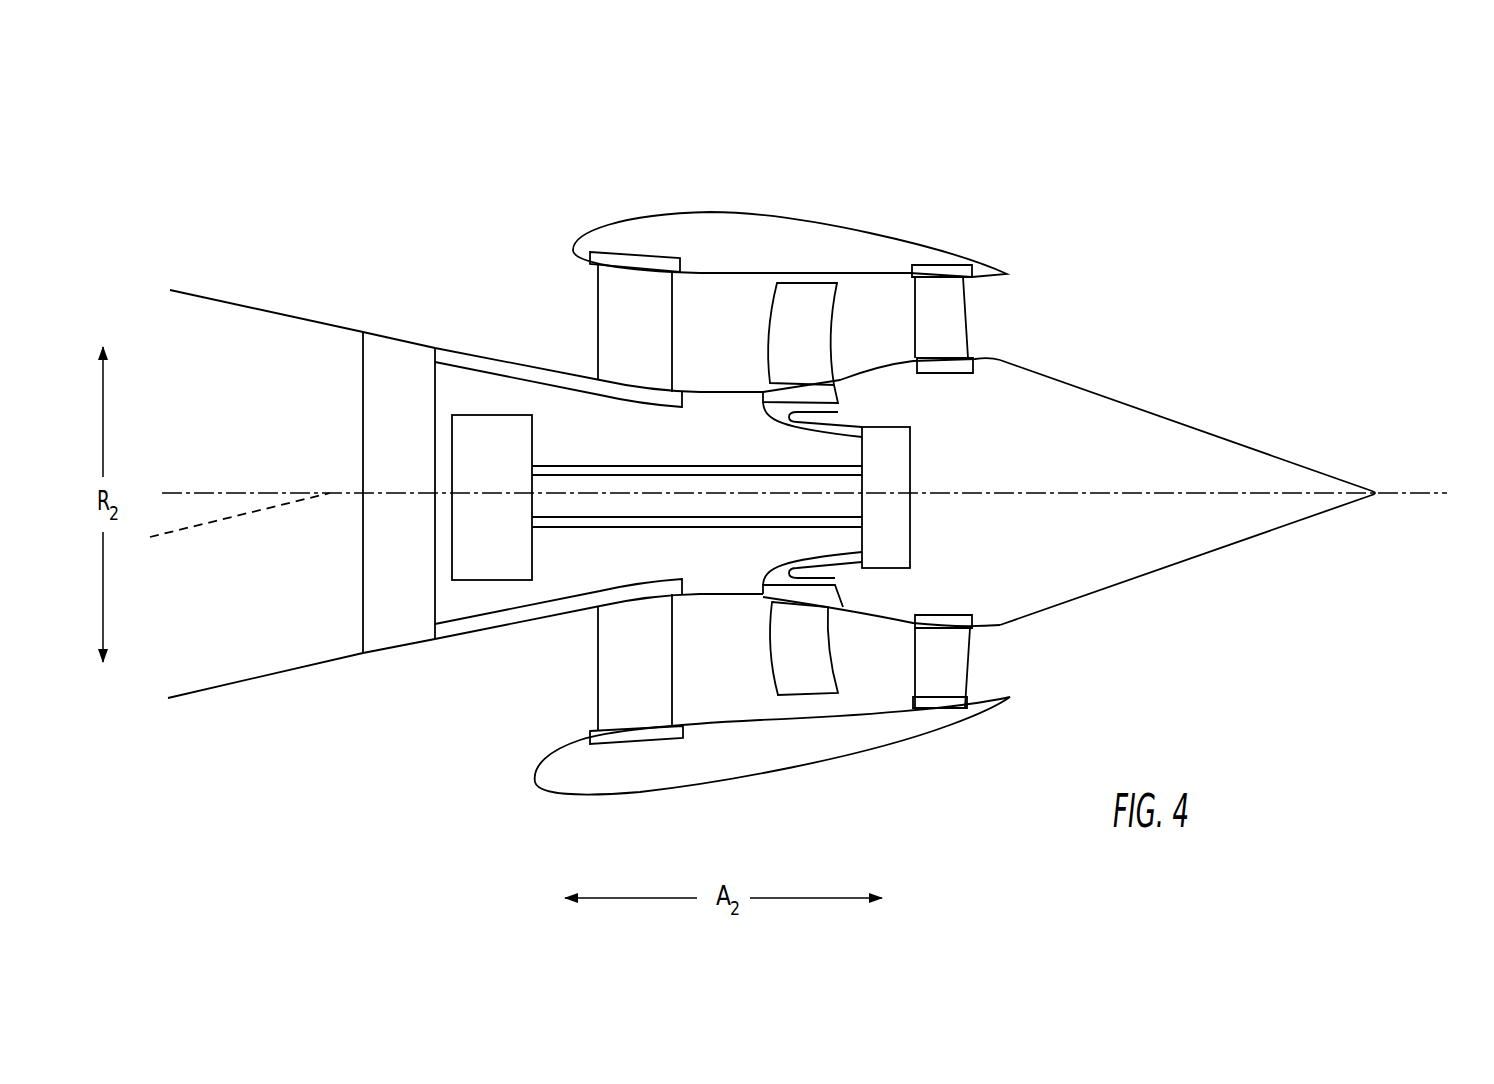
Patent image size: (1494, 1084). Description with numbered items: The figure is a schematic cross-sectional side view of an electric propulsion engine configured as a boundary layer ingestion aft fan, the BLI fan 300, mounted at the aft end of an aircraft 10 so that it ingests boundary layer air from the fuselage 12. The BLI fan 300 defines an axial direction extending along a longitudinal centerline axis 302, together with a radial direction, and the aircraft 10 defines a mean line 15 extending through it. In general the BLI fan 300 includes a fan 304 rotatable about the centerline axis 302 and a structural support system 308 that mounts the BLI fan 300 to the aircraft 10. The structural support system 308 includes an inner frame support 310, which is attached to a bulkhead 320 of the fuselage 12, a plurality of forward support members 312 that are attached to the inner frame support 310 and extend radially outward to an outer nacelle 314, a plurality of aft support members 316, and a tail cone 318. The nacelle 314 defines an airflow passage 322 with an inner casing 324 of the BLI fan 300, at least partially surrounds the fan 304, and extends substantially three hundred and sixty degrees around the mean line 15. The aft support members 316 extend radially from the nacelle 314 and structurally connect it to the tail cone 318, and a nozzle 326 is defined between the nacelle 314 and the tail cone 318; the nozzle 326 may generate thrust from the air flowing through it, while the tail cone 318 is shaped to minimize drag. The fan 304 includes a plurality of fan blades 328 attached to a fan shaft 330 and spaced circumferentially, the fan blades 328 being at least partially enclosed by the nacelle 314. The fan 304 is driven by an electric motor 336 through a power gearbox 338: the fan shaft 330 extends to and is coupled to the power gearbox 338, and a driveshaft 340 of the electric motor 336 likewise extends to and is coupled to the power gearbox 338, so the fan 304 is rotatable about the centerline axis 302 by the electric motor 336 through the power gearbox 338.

The aircraft 10 is at (283, 250).
The fuselage 12 is at (223, 687).
The mean line 15 is at (185, 530).
The BLI fan 300 is at (1062, 143).
The longitudinal centerline axis 302 is at (1407, 492).
The fan 304 is at (865, 313).
The structural support system 308 is at (557, 322).
The inner frame support 310 is at (518, 363).
The forward support members 312 is at (628, 283).
The outer nacelle 314 is at (702, 212).
The aft support members 316 is at (943, 287).
The tail cone 318 is at (1238, 545).
The bulkhead 320 is at (367, 402).
The airflow passage 322 is at (717, 695).
The inner casing 324 is at (750, 390).
The nozzle 326 is at (997, 315).
The fan blades 328 is at (810, 686).
The fan shaft 330 is at (842, 430).
The electric motor 336 is at (476, 557).
The power gearbox 338 is at (893, 457).
The driveshaft 340 is at (583, 525).